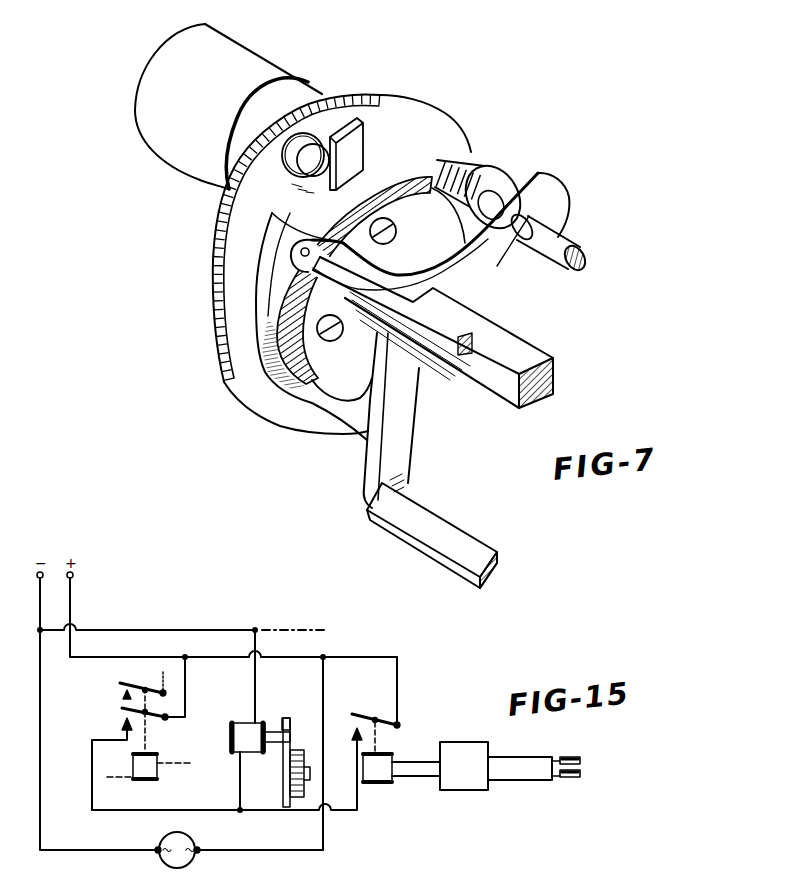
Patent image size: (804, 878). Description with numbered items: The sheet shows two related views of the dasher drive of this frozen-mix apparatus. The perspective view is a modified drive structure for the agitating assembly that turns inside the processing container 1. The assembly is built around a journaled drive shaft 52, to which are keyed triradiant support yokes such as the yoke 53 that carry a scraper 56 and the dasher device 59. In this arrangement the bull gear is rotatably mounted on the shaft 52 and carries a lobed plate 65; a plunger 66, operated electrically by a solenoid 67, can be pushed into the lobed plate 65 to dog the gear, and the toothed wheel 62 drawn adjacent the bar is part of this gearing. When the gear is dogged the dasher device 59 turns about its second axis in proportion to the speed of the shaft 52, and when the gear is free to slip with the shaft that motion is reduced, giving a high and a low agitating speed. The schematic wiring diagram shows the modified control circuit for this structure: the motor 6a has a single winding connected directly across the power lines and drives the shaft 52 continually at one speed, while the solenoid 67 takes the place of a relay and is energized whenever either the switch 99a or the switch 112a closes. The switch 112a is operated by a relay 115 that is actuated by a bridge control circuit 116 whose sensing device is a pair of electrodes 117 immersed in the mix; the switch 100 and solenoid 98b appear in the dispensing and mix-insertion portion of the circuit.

In FIG. 7, the solenoid 67 is at (236, 44).
In FIG. 15, the solenoid 67 is at (238, 722).
In FIG. 7, the processing container 1 is at (421, 97).
In FIG. 7, the plunger 66 is at (305, 174).
In FIG. 7, the lobed plate 65 is at (361, 147).
In FIG. 7, the ratchet wheel 62 is at (436, 308).
In FIG. 7, the triradiant support yoke 53 is at (497, 266).
In FIG. 7, the dasher device 59 is at (560, 243).
In FIG. 7, the drive shaft 52 is at (553, 364).
In FIG. 7, the scraper 56 is at (440, 553).
In FIG. 15, the switch 100 is at (122, 682).
In FIG. 15, the switch 99a is at (123, 720).
In FIG. 15, the solenoid 98b is at (156, 779).
In FIG. 15, the motor 6a is at (188, 837).
In FIG. 15, the switch 112a is at (357, 713).
In FIG. 15, the relay 115 is at (377, 783).
In FIG. 15, the bridge control circuit 116 is at (473, 741).
In FIG. 15, the electrodes 117 is at (587, 766).